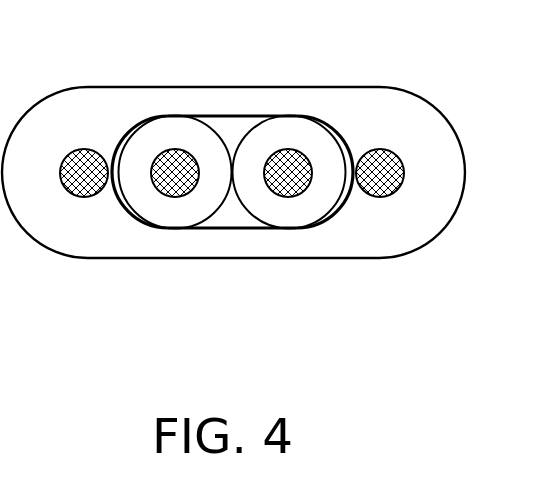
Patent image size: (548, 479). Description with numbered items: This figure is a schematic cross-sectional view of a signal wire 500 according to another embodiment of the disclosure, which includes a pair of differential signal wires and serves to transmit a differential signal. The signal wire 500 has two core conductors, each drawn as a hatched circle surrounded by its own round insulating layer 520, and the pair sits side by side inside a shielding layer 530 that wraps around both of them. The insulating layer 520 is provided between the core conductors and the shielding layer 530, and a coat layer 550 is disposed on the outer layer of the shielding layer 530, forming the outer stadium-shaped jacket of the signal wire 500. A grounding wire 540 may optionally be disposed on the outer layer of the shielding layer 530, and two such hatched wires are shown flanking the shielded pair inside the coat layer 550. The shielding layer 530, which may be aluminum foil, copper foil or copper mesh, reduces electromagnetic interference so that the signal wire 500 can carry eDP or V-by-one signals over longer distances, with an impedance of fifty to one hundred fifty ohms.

The signal wire 500 is at (248, 187).
The insulating layer 520 is at (318, 203).
The shielding layer 530 is at (232, 116).
The grounding wire 540 is at (82, 178).
The coat layer 550 is at (404, 119).